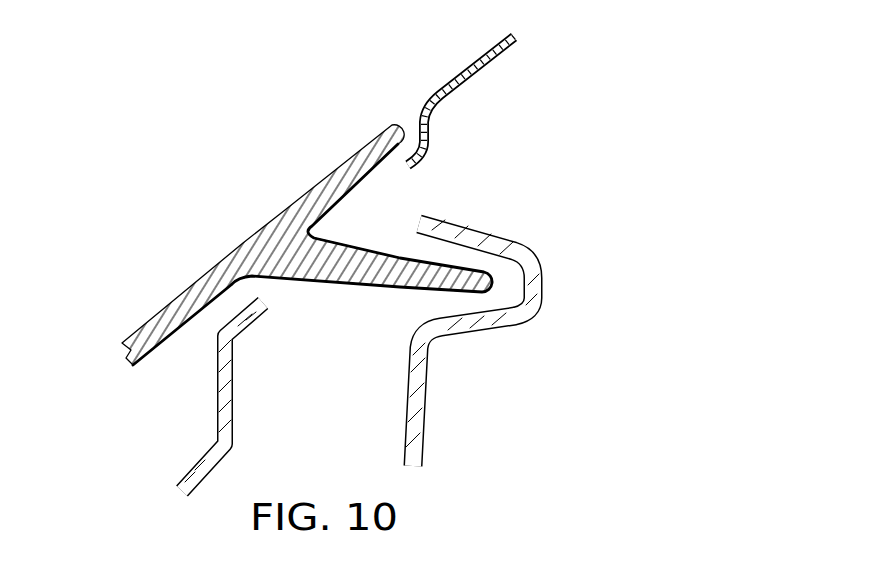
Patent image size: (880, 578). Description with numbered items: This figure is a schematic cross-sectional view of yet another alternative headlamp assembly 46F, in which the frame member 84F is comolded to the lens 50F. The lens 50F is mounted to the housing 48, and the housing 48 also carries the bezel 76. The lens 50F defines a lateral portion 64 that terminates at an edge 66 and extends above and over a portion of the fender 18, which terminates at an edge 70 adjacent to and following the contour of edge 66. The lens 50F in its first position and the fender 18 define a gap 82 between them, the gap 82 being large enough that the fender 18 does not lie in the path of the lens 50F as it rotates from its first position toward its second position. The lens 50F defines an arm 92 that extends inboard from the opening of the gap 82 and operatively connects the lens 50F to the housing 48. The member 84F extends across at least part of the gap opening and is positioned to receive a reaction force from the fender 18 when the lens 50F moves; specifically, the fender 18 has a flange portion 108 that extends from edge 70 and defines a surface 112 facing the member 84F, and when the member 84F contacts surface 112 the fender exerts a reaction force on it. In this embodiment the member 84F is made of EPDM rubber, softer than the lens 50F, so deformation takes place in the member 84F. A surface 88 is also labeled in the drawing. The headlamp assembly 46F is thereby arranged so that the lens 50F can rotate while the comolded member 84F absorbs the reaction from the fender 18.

The fender 18 is at (457, 92).
The headlamp assembly 46F is at (133, 235).
The housing 48 is at (543, 273).
The lens 50F is at (160, 313).
The lateral portion 64 is at (208, 273).
The edge 66 is at (240, 245).
The edge 70 is at (416, 110).
The bezel 76 is at (235, 387).
The gap 82 is at (400, 199).
The member 84F is at (333, 174).
The outer surface 88 is at (285, 210).
The arm 92 is at (350, 288).
The portion 108 is at (427, 154).
The surface 112 is at (396, 122).